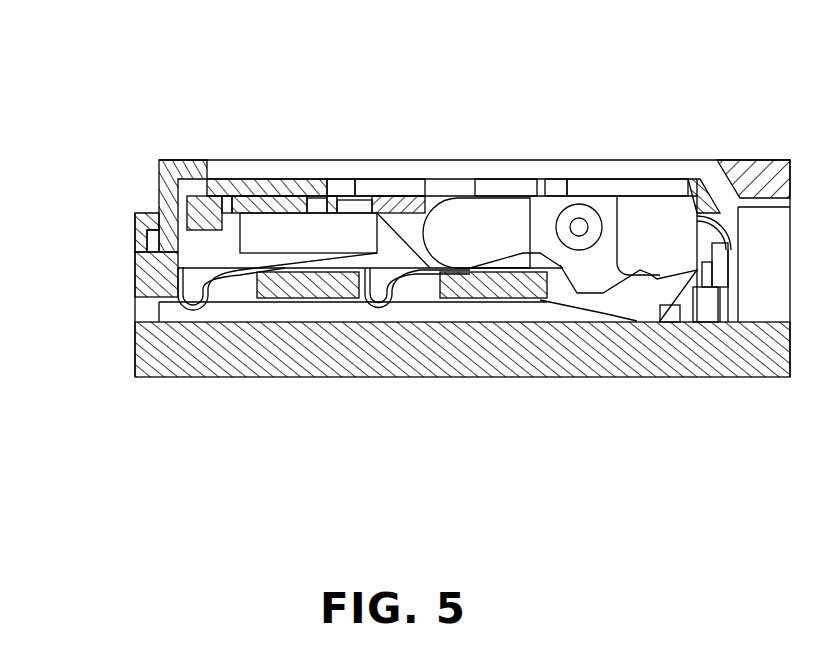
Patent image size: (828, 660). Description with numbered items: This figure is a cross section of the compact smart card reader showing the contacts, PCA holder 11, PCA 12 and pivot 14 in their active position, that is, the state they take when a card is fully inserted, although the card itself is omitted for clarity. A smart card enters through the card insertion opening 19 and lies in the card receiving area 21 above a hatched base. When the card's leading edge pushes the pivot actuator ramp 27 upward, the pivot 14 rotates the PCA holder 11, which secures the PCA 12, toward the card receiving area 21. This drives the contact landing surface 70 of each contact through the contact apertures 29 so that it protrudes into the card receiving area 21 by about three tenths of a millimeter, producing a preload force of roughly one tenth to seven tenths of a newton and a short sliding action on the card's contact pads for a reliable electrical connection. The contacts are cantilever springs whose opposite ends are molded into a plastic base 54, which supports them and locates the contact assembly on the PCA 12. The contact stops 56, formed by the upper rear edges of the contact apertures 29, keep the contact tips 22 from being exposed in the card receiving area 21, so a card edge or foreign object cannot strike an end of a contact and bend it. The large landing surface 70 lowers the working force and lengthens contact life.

The PCA holder 11 is at (268, 184).
The PCA 12 is at (387, 209).
The pivot 14 is at (482, 218).
The card insertion opening 19 is at (136, 288).
The card receiving area 21 is at (317, 312).
The contact tips 22 is at (168, 246).
The pivot actuator ramp 27 is at (610, 305).
The contact apertures 29 is at (196, 303).
The plastic base 54 is at (308, 232).
The contact stops 56 is at (236, 290).
The contact landing surface 70 is at (182, 283).